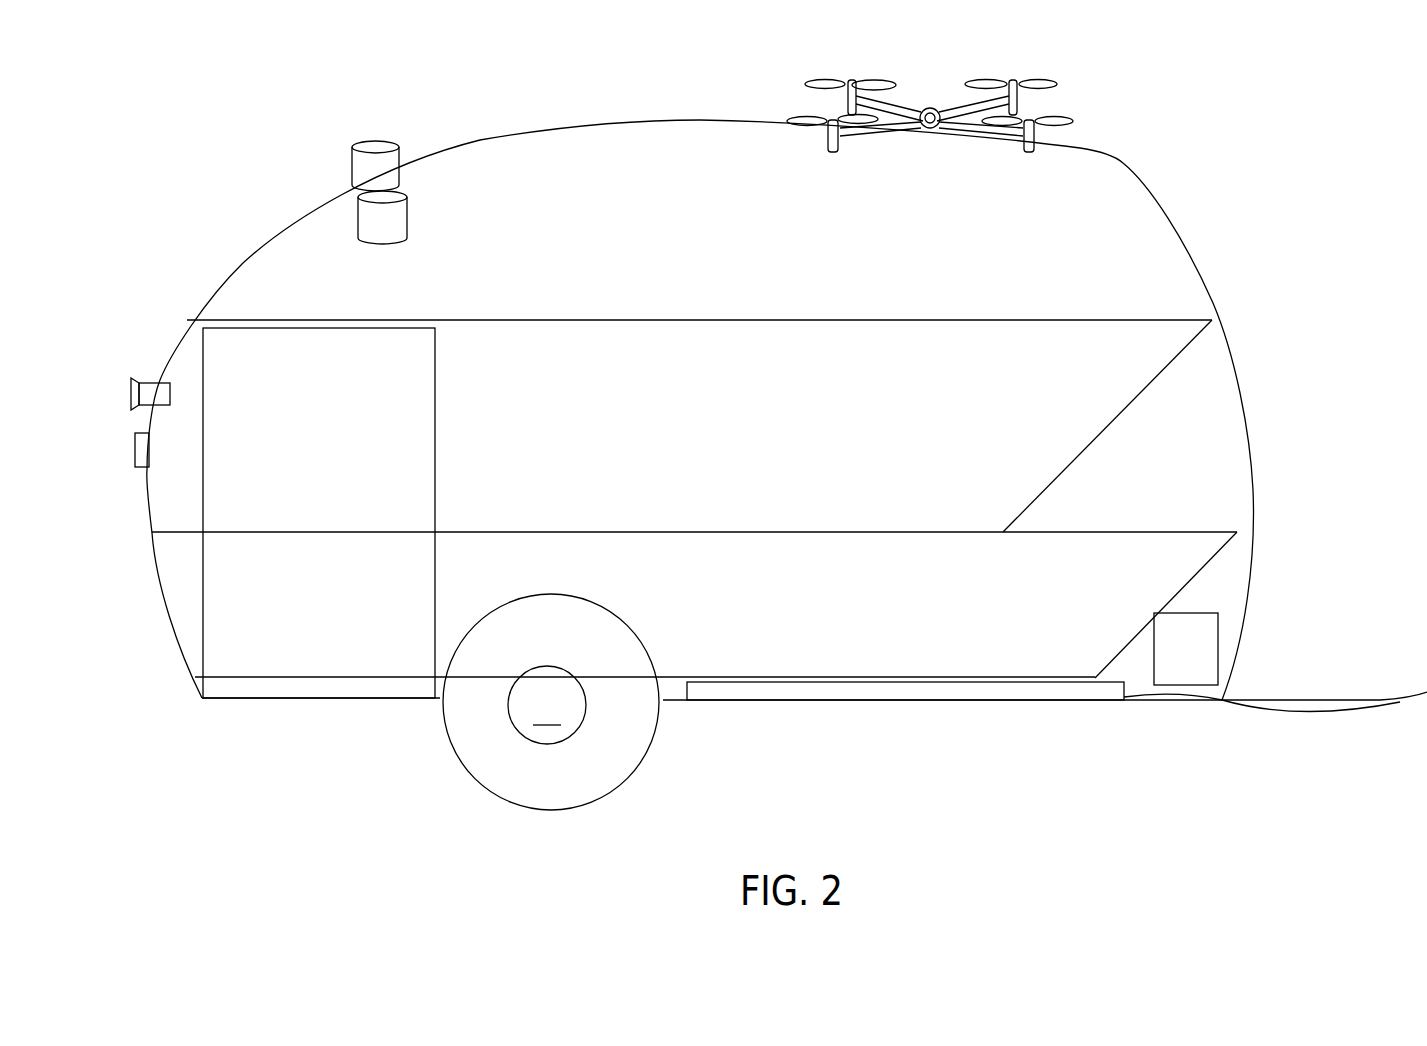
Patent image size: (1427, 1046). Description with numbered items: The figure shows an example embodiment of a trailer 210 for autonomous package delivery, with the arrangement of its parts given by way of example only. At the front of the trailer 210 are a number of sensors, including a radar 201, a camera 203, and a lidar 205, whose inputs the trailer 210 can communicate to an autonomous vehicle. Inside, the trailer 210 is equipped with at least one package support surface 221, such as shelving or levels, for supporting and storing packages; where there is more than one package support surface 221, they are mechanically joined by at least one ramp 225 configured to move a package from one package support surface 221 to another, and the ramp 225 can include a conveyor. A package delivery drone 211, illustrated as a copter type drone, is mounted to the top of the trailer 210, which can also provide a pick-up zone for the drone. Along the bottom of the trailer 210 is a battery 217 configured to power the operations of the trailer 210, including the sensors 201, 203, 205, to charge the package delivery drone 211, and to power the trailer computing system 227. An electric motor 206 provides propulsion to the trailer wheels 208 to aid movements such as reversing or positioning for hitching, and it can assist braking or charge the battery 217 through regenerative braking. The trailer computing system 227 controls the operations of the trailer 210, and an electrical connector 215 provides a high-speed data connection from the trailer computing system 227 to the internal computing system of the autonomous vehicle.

The radar 201 is at (123, 457).
The camera 203 is at (130, 366).
The lidar 205 is at (343, 165).
The electric motor 206 is at (528, 738).
The trailer wheels 208 is at (448, 740).
The trailer 210 is at (1282, 155).
The package delivery drone 211 is at (1067, 92).
The electrical connector 215 is at (1285, 715).
The battery 217 is at (831, 697).
The package support surface 221 is at (753, 328).
The ramp 225 is at (1130, 417).
The trailer computing system 227 is at (1221, 627).